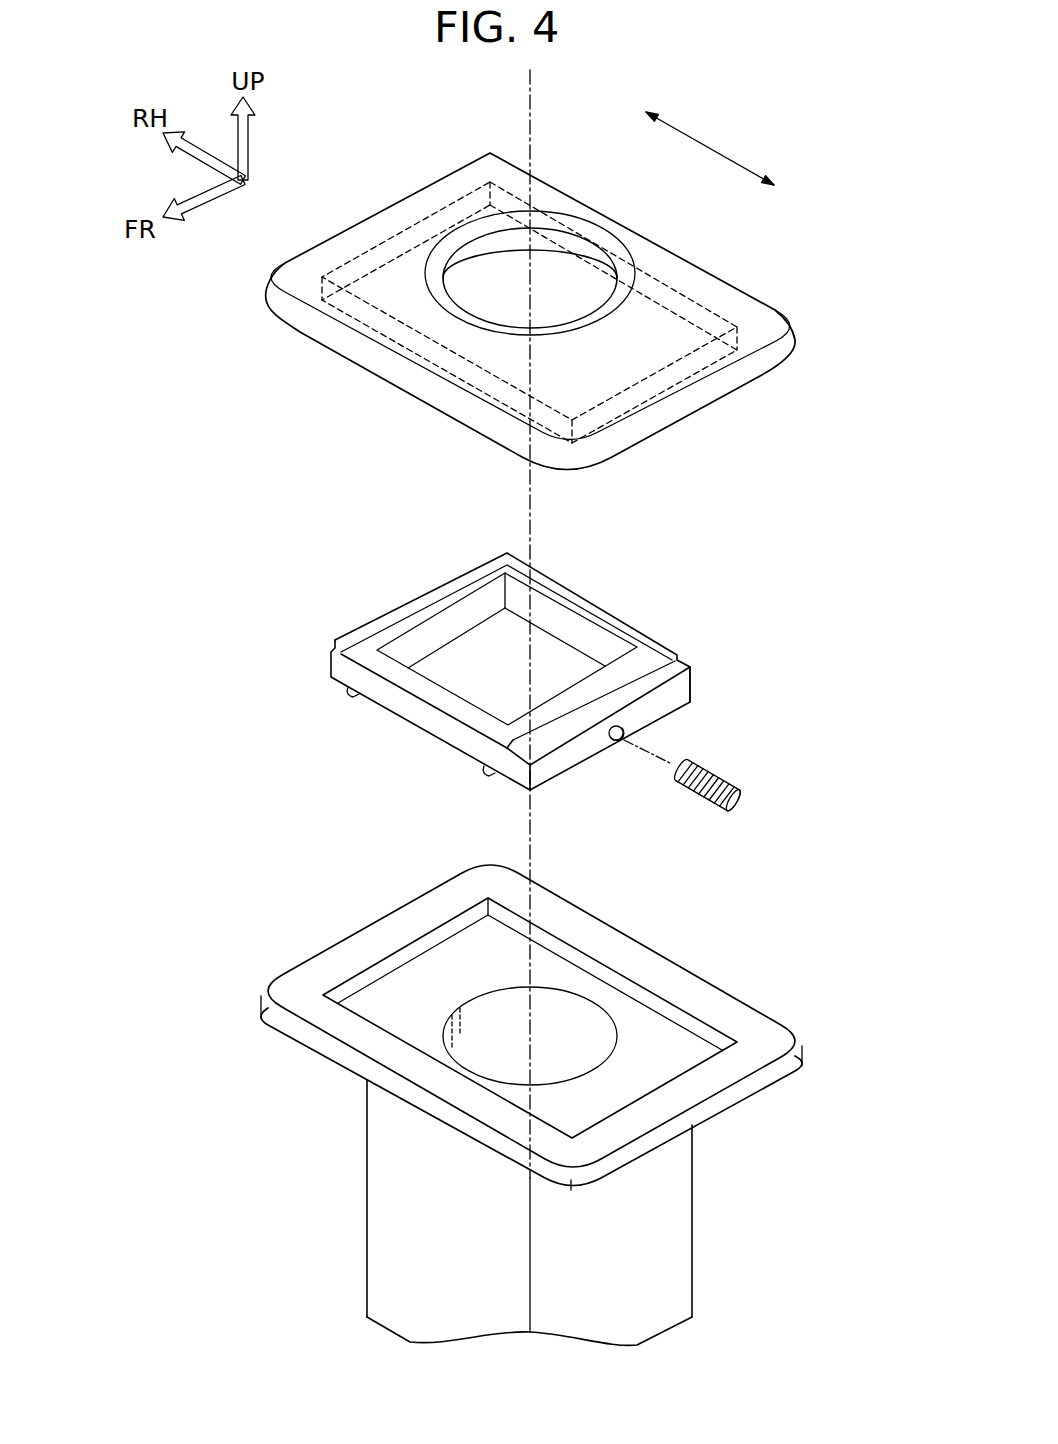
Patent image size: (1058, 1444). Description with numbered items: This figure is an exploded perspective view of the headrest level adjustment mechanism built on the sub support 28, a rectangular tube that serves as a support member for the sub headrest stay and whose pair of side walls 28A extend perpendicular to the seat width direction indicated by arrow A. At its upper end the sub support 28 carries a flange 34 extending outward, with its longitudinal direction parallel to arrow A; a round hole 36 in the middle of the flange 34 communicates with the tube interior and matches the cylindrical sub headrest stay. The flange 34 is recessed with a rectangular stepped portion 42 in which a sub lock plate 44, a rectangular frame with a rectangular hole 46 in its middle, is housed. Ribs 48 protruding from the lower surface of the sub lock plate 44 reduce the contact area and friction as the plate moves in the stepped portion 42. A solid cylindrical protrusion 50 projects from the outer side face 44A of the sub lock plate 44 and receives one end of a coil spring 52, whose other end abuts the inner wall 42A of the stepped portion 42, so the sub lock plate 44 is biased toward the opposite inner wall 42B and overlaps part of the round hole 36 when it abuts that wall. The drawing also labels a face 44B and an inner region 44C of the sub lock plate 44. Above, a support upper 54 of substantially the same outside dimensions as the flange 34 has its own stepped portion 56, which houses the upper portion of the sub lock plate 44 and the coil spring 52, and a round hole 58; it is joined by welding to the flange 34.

The seat width direction arrow A is at (710, 147).
The sub support 28 is at (527, 1212).
The side walls 28A is at (363, 1197).
The flange 34 is at (544, 1007).
The round hole 36 is at (590, 998).
The stepped portion 42 is at (480, 960).
The inner wall 42A is at (668, 1078).
The inner wall 42B is at (377, 974).
The sub lock plate 44 is at (552, 683).
The outer side face 44A is at (683, 693).
The frame front face 44B is at (640, 677).
The frame inner wall 44C is at (603, 683).
The rectangular hole 46 is at (553, 620).
The ribs 48 is at (350, 698).
The protrusion 50 is at (622, 743).
The coil spring 52 is at (720, 783).
The support upper 54 is at (530, 297).
The stepped portion 56 is at (583, 258).
The round hole 58 is at (546, 224).